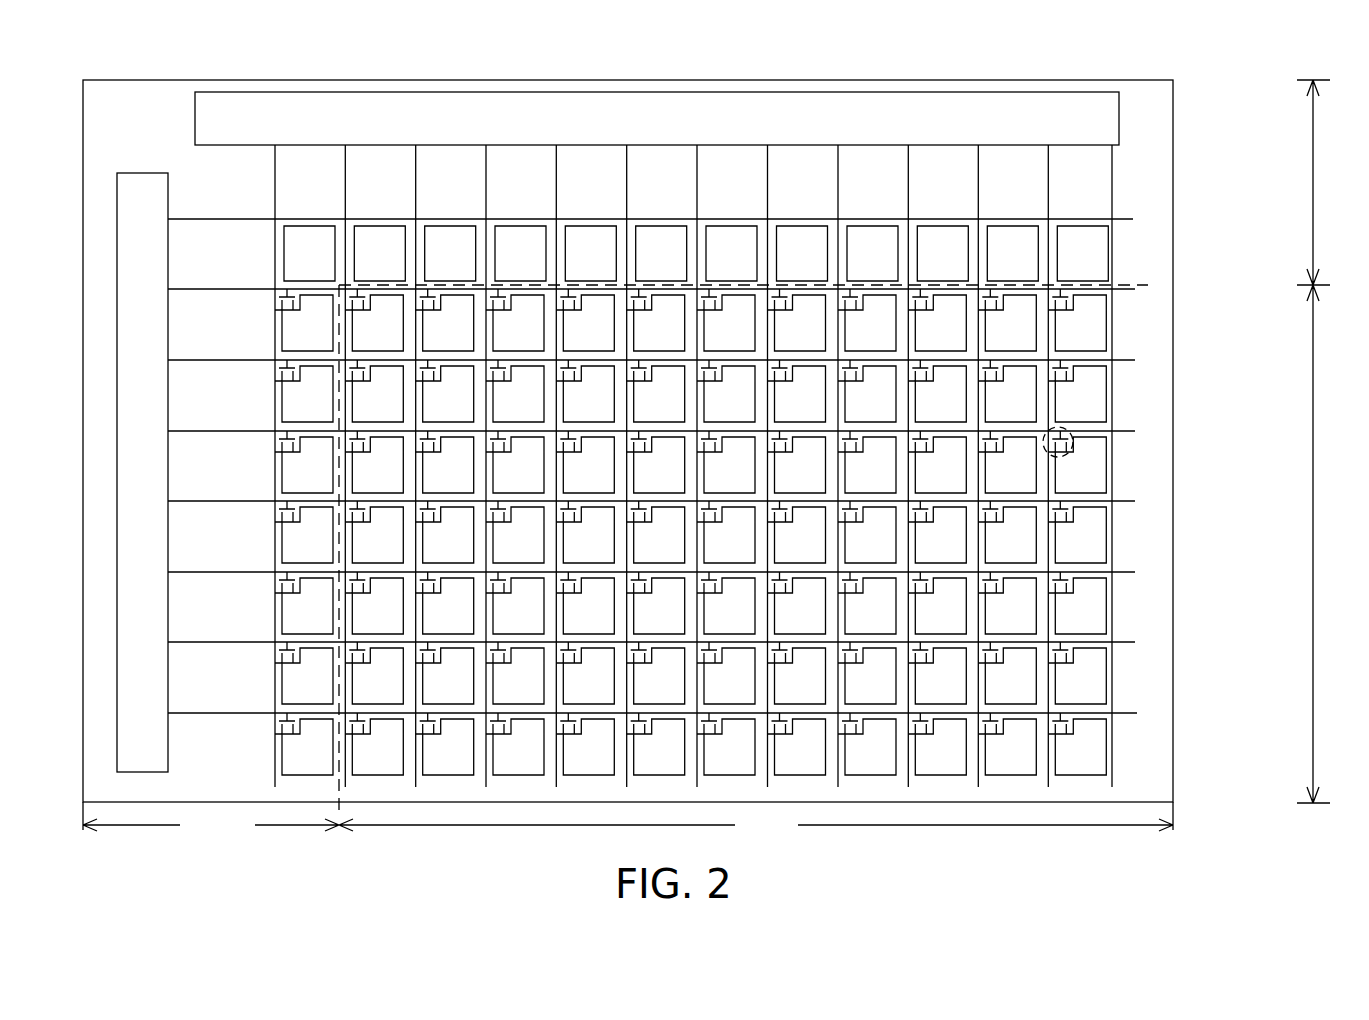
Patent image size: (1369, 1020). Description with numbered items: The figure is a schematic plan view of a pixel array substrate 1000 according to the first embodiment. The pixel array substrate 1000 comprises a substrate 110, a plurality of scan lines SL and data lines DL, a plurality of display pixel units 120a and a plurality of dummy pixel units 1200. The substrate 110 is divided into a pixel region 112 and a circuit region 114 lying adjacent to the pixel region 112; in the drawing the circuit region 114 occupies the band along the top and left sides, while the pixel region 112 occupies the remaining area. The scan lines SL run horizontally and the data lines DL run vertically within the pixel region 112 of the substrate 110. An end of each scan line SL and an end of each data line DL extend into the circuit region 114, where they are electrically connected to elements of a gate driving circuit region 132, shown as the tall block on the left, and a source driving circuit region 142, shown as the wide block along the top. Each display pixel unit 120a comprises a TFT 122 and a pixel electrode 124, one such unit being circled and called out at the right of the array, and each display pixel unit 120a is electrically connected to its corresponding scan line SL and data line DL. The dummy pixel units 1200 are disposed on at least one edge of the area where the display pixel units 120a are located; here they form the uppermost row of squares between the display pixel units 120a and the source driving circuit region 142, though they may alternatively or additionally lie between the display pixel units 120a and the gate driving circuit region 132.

The pixel array substrate 1000 is at (702, 453).
The substrate 110 is at (1162, 753).
The pixel region 112 is at (854, 564).
The circuit region 114 is at (726, 461).
The display pixel unit 120a is at (1176, 457).
The TFT 122 is at (1075, 440).
The pixel electrode 124 is at (1090, 478).
The dummy pixel unit 1200 is at (1122, 257).
The gate driving circuit region 132 is at (127, 238).
The source driving circuit region 142 is at (1009, 105).
The data line DL is at (1115, 680).
The scan line SL is at (1128, 712).